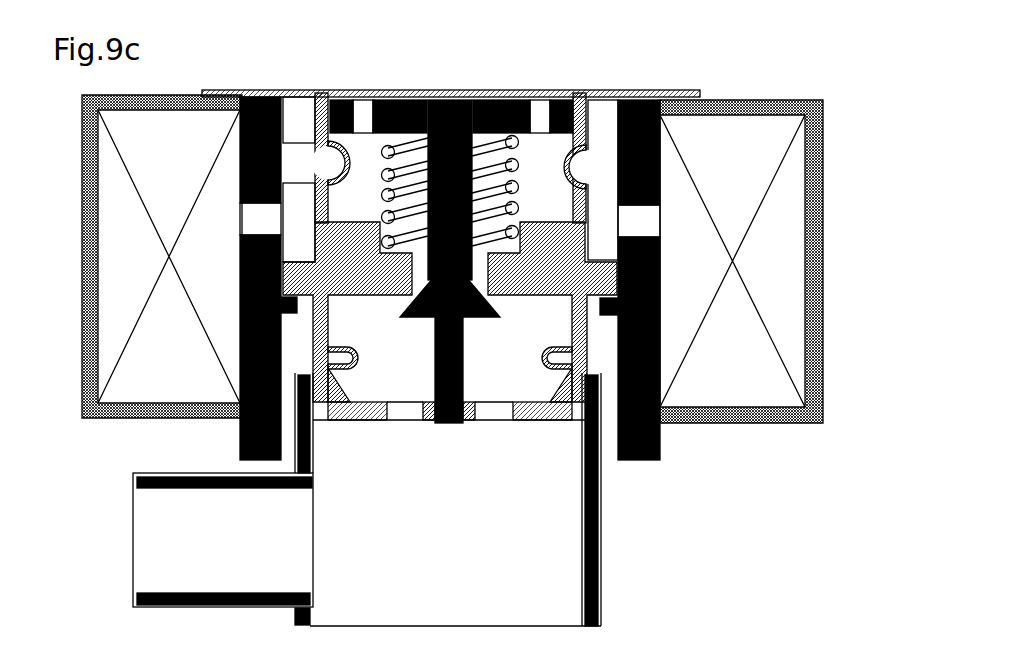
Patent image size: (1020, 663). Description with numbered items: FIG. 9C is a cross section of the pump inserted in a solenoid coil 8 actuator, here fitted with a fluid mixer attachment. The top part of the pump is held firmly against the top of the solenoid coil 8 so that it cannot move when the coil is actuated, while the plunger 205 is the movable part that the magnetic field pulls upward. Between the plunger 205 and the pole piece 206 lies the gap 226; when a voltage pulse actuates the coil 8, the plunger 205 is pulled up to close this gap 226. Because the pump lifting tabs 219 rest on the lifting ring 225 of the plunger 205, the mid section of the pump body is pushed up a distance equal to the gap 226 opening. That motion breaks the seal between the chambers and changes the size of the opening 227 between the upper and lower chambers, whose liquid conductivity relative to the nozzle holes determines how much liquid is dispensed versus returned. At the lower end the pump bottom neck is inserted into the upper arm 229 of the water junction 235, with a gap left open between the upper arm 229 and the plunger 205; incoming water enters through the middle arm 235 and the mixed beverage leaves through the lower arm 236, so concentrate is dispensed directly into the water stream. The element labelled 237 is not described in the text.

The solenoid coil 8 is at (823, 263).
The plunger 205 is at (237, 440).
The pole piece 206 is at (258, 118).
The lifting tabs 219 is at (602, 260).
The lifting ring 225 is at (600, 318).
The gap 226 is at (638, 220).
The opening 227 is at (427, 263).
The upper arm 229 is at (602, 408).
The water junction (middle arm) 235 is at (183, 608).
The lower arm 236 is at (294, 623).
The bellows 237 is at (299, 180).